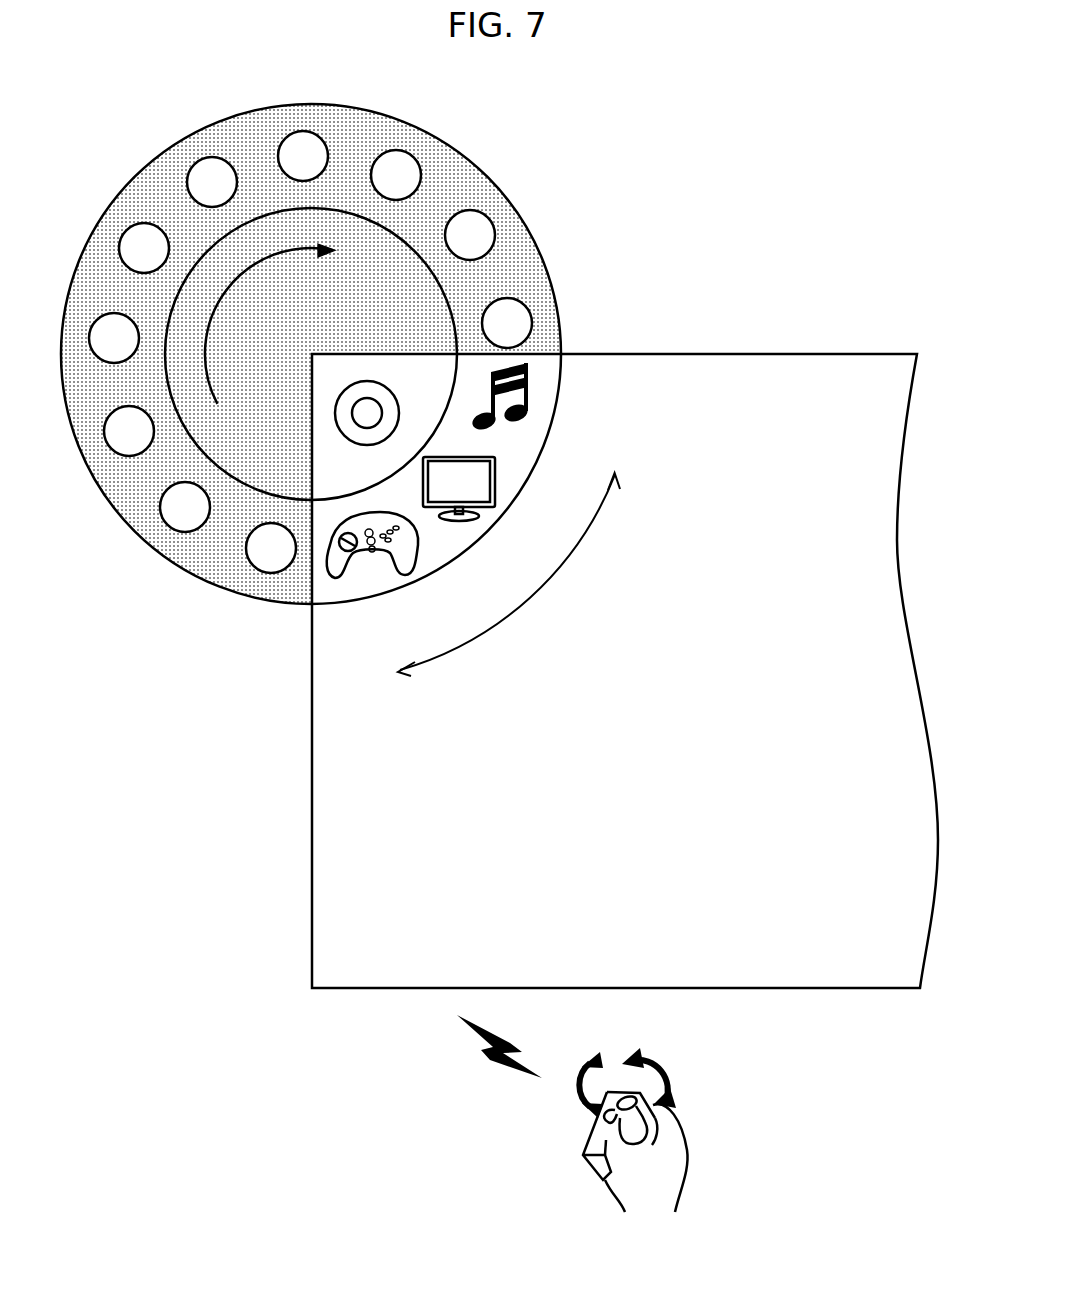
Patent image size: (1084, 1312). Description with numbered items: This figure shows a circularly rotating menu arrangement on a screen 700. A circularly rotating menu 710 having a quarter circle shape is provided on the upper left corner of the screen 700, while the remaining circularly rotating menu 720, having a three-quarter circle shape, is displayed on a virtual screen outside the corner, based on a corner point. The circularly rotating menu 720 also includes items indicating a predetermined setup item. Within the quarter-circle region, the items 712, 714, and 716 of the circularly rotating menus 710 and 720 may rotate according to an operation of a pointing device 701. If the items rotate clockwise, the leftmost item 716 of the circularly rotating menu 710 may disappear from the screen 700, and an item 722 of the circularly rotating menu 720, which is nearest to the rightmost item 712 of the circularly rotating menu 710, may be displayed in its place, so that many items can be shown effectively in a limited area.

The screen 700 is at (753, 352).
The pointing device 701 is at (682, 1147).
The circularly rotating menu 710 is at (545, 375).
The item 712 is at (523, 422).
The item 714 is at (462, 518).
The item 716 is at (370, 560).
The circularly rotating menu 720 is at (455, 177).
The item 722 is at (418, 312).